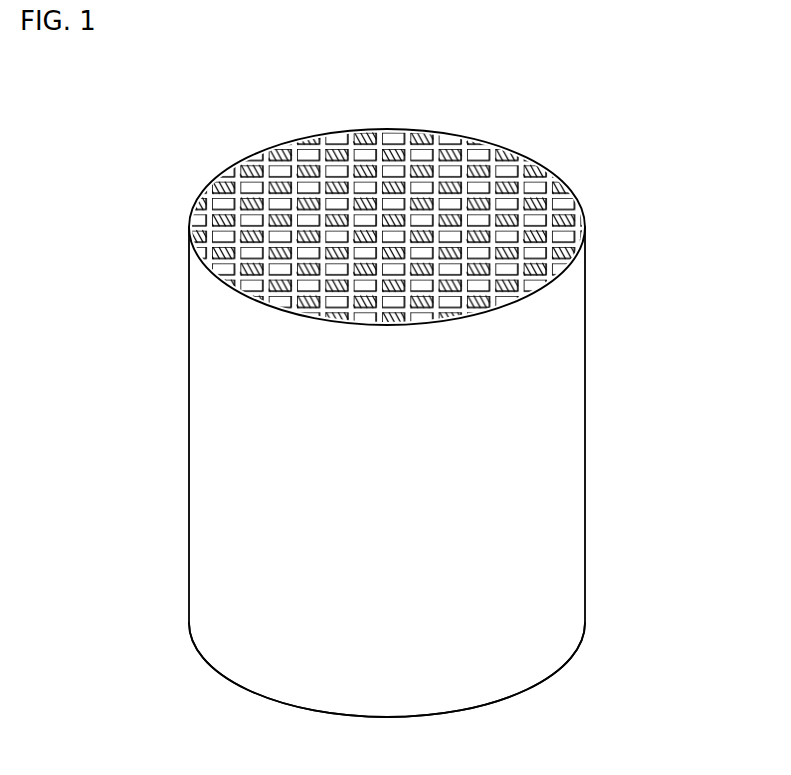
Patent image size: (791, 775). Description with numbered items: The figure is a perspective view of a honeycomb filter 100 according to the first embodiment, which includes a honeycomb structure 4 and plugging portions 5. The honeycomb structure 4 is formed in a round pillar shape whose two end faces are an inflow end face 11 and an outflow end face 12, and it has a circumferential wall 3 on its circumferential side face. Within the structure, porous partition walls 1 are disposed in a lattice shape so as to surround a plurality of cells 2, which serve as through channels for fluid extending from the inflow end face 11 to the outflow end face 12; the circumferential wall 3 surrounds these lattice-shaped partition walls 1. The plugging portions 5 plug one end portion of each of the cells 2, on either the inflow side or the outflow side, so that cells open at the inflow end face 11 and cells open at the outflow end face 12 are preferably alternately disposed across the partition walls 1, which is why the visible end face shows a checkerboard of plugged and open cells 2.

The honeycomb filter 100 is at (724, 74).
The partition wall 1 is at (493, 192).
The cell 2 is at (433, 197).
The circumferential wall 3 is at (553, 361).
The honeycomb structure 4 is at (591, 272).
The plugging portion 5 is at (437, 160).
The inflow end face 11 is at (266, 151).
The outflow end face 12 is at (214, 681).